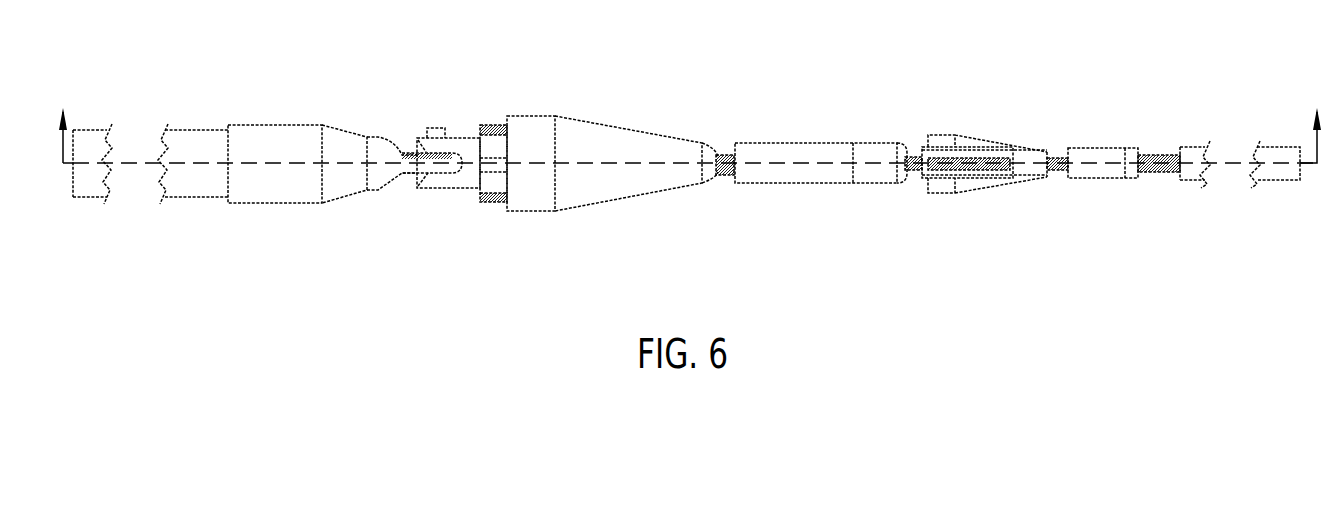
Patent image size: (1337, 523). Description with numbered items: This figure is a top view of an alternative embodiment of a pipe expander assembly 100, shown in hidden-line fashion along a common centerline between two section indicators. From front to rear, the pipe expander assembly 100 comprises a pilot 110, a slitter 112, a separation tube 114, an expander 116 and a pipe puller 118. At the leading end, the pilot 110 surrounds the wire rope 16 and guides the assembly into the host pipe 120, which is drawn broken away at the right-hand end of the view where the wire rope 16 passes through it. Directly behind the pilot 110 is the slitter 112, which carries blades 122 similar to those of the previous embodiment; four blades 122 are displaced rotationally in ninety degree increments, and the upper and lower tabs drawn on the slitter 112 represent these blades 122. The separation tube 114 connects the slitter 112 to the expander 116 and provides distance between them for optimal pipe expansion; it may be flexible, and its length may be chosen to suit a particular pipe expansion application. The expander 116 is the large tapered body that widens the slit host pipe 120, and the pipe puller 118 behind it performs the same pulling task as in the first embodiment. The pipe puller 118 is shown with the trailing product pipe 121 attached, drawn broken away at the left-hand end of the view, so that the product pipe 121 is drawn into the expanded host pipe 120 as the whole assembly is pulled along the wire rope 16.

The pipe expander assembly 100 is at (775, 65).
The product pipe 121 is at (198, 143).
The pipe puller 118 is at (345, 130).
The expander 116 is at (662, 135).
The separation tube 114 is at (792, 145).
The blades 122 is at (947, 137).
The slitter 112 is at (970, 138).
The pilot 110 is at (1098, 150).
The wire rope 16 is at (1170, 163).
The host pipe 120 is at (1290, 160).